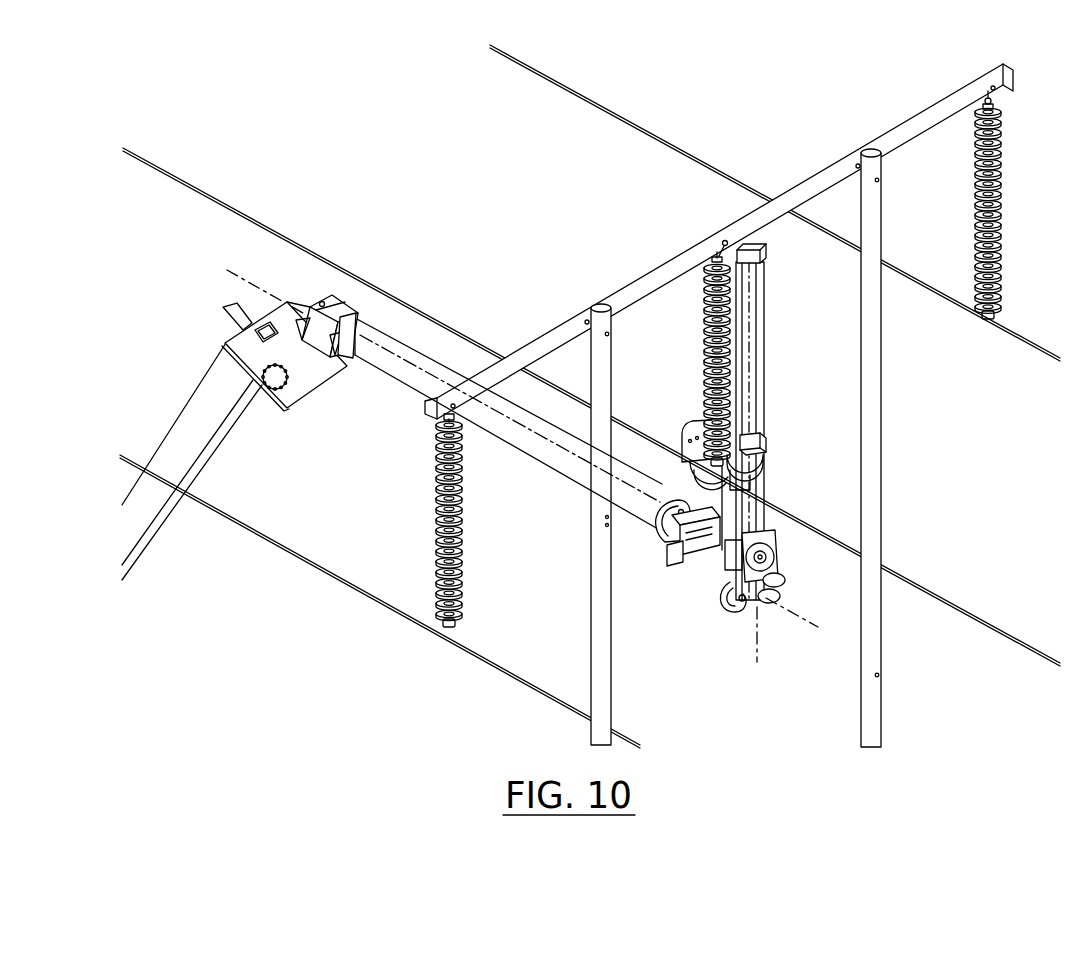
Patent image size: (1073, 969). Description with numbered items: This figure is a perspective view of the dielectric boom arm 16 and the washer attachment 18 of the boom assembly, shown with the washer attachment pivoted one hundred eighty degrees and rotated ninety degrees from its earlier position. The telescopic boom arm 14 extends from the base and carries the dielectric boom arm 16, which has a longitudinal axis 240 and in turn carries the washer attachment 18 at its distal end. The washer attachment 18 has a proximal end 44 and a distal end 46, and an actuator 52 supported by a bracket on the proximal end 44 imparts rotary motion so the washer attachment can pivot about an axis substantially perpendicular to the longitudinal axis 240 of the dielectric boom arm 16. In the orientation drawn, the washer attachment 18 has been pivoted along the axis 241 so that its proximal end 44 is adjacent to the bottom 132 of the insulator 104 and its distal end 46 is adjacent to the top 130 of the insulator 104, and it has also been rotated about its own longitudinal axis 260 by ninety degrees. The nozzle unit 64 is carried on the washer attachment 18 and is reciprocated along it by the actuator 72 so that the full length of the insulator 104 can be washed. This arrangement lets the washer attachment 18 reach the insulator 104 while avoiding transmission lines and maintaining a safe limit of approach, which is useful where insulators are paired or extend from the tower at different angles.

The telescopic boom arm 14 is at (208, 461).
The dielectric boom arm 16 is at (510, 456).
The washer attachment 18 is at (796, 431).
The proximal end 44 is at (791, 536).
The distal end 46 is at (760, 270).
The actuator 52 is at (682, 550).
The nozzle unit 64 is at (680, 433).
The actuator 72 is at (700, 606).
The insulator 104 is at (652, 384).
The top 130 is at (781, 181).
The bottom 132 is at (796, 449).
The longitudinal axis 240 is at (251, 278).
The axis 241 is at (812, 591).
The longitudinal axis 260 is at (807, 640).